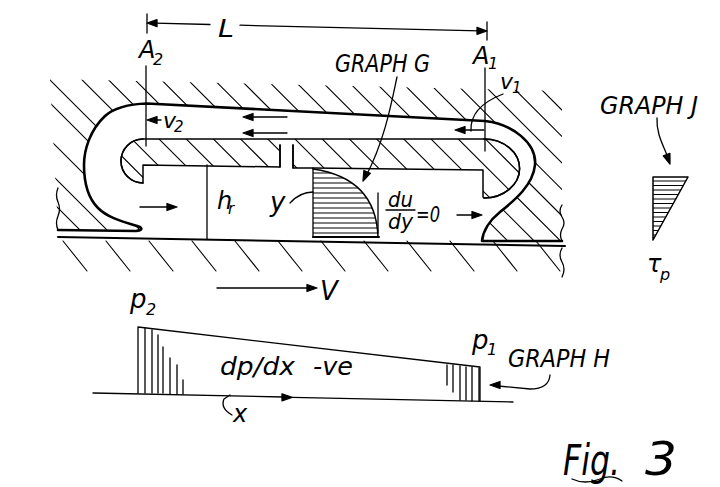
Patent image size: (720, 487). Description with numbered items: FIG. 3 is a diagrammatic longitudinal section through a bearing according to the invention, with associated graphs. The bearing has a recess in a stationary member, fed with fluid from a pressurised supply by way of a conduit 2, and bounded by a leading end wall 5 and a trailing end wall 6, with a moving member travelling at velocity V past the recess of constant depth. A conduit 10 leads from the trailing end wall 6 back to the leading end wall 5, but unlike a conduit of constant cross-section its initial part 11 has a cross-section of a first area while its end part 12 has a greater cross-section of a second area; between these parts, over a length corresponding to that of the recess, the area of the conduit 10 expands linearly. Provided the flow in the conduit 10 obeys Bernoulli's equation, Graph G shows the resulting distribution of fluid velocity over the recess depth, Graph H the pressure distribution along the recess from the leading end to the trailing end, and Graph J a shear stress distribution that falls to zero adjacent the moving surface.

The conduit 2 is at (288, 167).
The leading end wall 5 is at (143, 213).
The trailing end wall 6 is at (478, 227).
The conduit 10 is at (319, 100).
The initial part 11 is at (520, 171).
The end part 12 is at (98, 167).